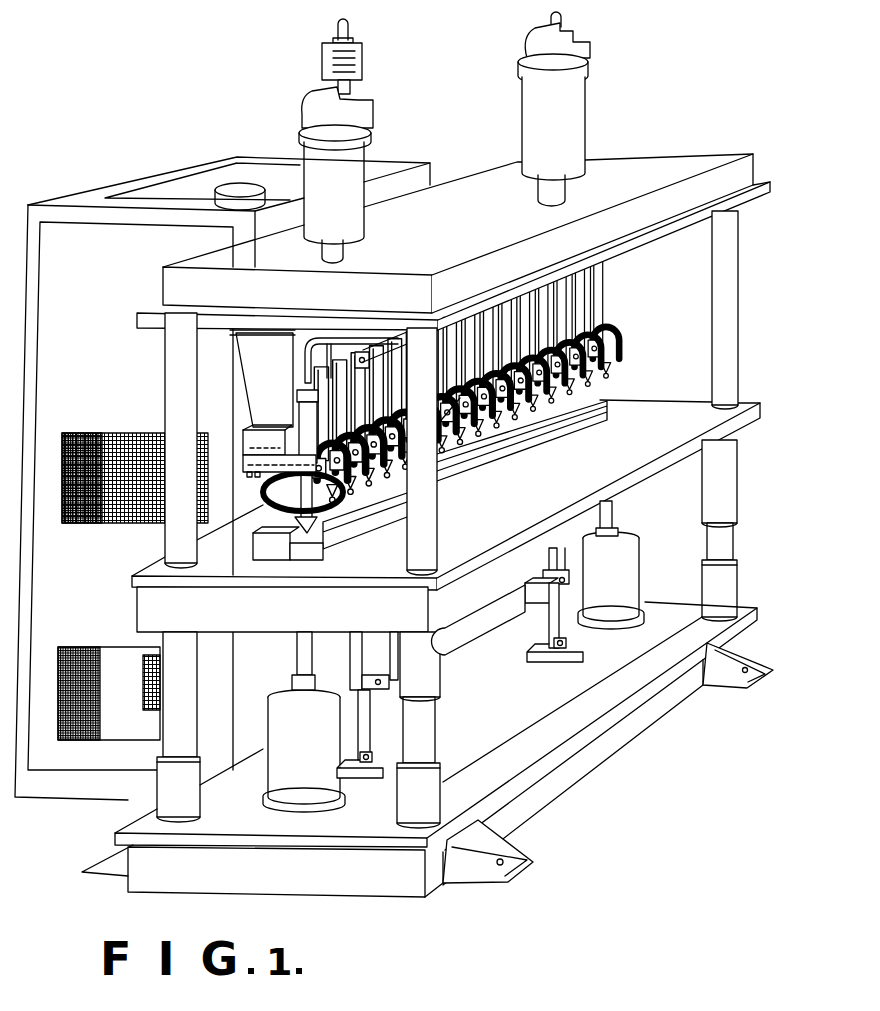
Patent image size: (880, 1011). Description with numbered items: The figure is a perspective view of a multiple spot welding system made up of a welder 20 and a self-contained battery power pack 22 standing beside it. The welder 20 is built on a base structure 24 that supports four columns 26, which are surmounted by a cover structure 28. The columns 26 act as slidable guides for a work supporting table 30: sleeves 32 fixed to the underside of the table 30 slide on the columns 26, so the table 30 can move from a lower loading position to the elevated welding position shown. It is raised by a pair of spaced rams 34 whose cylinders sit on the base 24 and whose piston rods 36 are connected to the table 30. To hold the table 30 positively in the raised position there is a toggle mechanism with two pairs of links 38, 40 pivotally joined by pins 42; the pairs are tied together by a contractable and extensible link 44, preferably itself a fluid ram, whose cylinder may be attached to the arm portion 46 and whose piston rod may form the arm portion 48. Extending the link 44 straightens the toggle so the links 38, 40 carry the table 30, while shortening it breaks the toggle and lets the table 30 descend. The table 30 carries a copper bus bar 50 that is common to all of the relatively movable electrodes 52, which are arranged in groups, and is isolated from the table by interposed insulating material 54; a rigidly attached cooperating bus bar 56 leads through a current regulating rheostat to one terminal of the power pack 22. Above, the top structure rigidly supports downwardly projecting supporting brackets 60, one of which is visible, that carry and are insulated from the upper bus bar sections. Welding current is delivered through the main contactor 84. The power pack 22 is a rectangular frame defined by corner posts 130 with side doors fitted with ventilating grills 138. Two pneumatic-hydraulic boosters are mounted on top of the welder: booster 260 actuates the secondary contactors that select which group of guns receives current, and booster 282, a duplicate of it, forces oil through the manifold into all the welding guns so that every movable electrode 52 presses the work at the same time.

The welder 20 is at (480, 220).
The power pack 22 is at (168, 175).
The base structure 24 is at (572, 723).
The columns 26 is at (713, 306).
The cover structure 28 is at (668, 210).
The work supporting table 30 is at (530, 528).
The sleeves 32 is at (730, 488).
The rams 34 is at (285, 775).
The piston rods 36 is at (305, 666).
The links 38 is at (360, 645).
The links 40 is at (364, 742).
The pins 42 is at (389, 686).
The contractable and extensible link 44 is at (470, 643).
The arm portion 46 is at (393, 662).
The arm portion 48 is at (518, 596).
The bus bar 50 is at (586, 412).
The movable electrodes 52 is at (531, 432).
The insulating material 54 is at (272, 560).
The cooperating bus bar 56 is at (253, 540).
The supporting brackets 60 is at (283, 373).
The main contactor 84 is at (238, 182).
The corner posts 130 is at (36, 372).
The ventilating grills 138 is at (113, 525).
The pneumatic-hydraulic booster 260 is at (380, 146).
The booster 282 is at (584, 112).